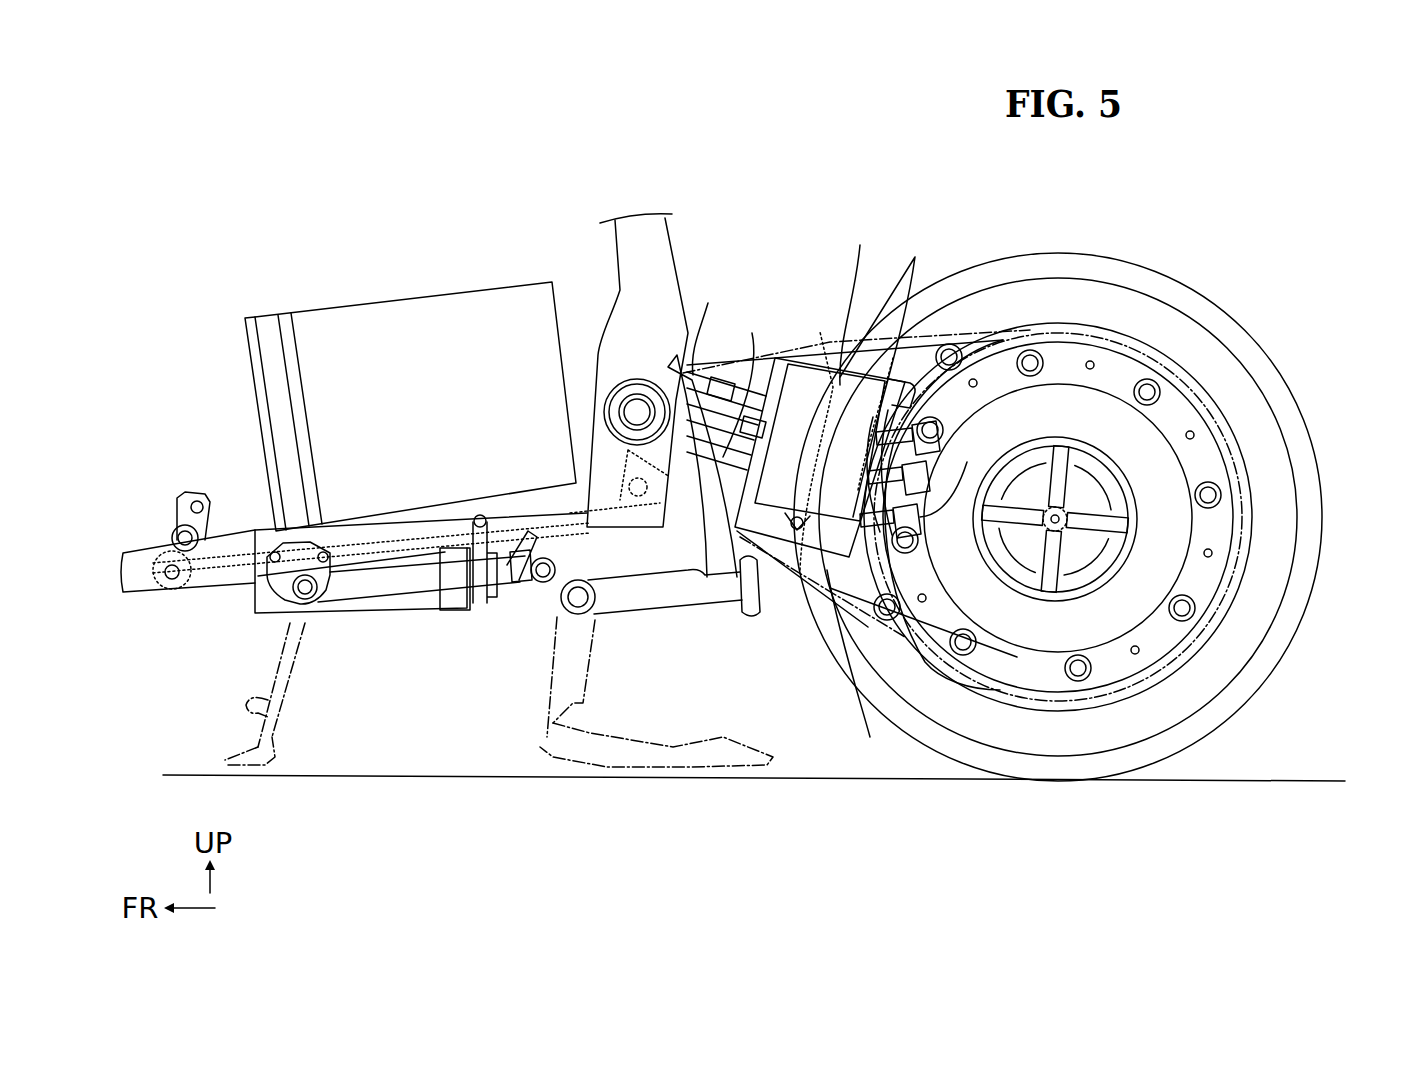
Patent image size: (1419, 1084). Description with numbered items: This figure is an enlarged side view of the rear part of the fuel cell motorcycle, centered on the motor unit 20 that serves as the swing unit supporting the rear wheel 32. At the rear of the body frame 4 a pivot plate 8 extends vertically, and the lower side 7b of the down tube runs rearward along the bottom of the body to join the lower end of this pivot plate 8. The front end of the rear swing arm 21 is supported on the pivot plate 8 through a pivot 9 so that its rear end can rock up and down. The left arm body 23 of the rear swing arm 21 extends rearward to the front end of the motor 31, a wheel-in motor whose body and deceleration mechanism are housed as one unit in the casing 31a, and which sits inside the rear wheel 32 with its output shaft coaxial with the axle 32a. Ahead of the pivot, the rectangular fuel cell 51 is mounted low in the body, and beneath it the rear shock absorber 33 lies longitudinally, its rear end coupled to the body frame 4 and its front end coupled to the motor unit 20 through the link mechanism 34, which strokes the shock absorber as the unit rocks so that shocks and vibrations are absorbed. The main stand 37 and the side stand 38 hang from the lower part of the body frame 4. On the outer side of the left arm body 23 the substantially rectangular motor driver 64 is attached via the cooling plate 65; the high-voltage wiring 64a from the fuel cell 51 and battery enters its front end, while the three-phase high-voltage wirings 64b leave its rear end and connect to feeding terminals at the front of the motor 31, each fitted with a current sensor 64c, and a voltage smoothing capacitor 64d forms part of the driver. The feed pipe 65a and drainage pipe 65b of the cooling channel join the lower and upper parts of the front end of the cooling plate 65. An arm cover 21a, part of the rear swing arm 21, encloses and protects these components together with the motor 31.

The body frame 4 is at (645, 407).
The lower side 7b is at (215, 573).
The pivot plate 8 is at (660, 242).
The pivot 9 is at (632, 405).
The motor unit 20 is at (1099, 491).
The rear swing arm 21 is at (788, 572).
The arm cover 21a is at (787, 572).
The left arm body 23 is at (828, 570).
The motor 31 is at (1165, 370).
The casing 31a is at (1175, 525).
The rear wheel 32 is at (1240, 333).
The axle 32a is at (1062, 517).
The rear shock absorber 33 is at (350, 606).
The link mechanism 34 is at (243, 521).
The main stand 37 is at (668, 590).
The side stand 38 is at (415, 574).
The fuel cell 51 is at (413, 295).
The motor driver 64 is at (844, 374).
The high-voltage wiring 64a is at (751, 379).
The three-phase high-voltage wirings 64b is at (894, 370).
The current sensor 64c is at (920, 434).
The voltage smoothing capacitor 64d is at (856, 298).
The cooling plate 65 is at (705, 417).
The feed pipe 65a is at (672, 497).
The drainage pipe 65b is at (712, 322).